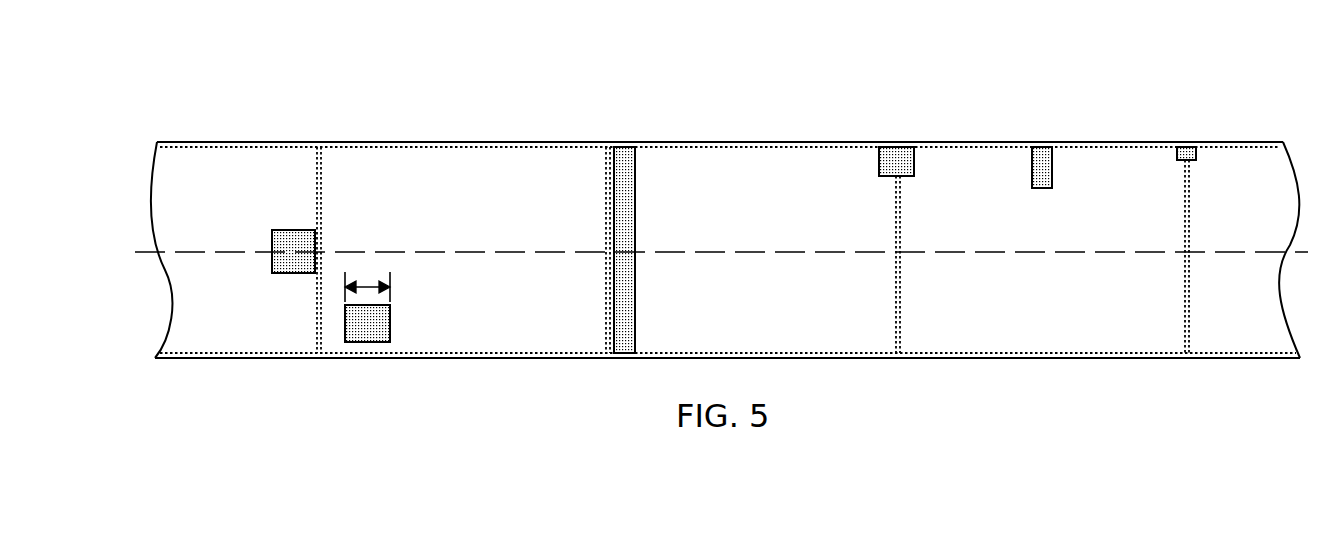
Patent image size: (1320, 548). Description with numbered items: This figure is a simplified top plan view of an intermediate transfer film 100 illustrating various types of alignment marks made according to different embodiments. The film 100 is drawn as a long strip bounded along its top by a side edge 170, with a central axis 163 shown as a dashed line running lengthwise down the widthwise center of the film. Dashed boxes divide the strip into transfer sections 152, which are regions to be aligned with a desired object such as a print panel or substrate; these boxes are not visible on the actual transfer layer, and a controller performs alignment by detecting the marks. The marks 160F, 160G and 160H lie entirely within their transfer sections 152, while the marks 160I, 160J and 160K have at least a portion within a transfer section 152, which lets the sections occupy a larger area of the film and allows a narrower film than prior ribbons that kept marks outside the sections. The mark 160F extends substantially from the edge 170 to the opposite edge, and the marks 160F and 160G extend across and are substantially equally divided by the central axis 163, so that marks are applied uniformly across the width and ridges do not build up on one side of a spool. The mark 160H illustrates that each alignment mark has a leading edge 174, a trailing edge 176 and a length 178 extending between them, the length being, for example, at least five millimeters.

The intermediate transfer film 100 is at (176, 106).
The transfer section 152 is at (284, 148).
The alignment mark 160F is at (632, 208).
The alignment mark 160G is at (290, 230).
The alignment mark 160H is at (370, 344).
The alignment mark 160I is at (885, 178).
The alignment mark 160J is at (1047, 190).
The alignment mark 160K is at (1187, 146).
The central axis 163 is at (953, 252).
The side edge 170 is at (790, 141).
The leading edge 174 is at (345, 322).
The trailing edge 176 is at (390, 312).
The length 178 is at (367, 285).